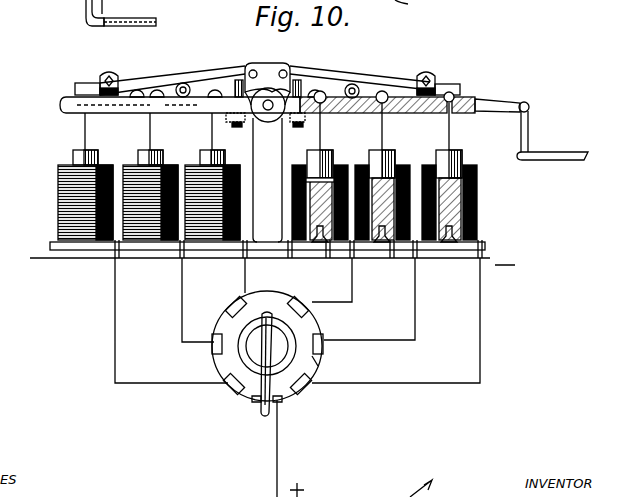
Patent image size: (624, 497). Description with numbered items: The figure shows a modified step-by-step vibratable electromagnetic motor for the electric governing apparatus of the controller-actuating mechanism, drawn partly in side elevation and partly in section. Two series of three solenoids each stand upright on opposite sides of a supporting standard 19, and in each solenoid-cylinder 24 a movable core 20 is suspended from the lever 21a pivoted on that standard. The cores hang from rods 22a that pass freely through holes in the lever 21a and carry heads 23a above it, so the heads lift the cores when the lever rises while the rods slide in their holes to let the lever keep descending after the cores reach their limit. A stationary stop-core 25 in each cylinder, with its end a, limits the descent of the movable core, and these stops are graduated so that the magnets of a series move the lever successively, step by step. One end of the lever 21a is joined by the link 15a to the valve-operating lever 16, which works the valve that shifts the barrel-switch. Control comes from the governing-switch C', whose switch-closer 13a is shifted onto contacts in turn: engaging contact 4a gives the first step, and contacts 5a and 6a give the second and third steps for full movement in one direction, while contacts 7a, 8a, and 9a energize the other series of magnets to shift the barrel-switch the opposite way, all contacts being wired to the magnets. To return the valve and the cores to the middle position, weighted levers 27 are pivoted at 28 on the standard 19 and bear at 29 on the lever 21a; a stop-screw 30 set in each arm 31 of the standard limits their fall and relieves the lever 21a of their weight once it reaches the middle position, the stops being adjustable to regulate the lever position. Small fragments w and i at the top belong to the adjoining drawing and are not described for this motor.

The lever 21a is at (60, 106).
The heads 23a is at (450, 60).
The weighted levers 27 is at (86, 82).
The bearing point 29 is at (183, 82).
The stop-screw 30 is at (213, 88).
The pivot 28 is at (252, 72).
The standard 19 is at (267, 180).
The arms 31 is at (233, 113).
The rods 22a is at (86, 132).
The solenoid cores 20 is at (72, 158).
The solenoid-cylinder 24 is at (492, 200).
The core end a is at (308, 176).
The stationary stop-core 25 is at (478, 226).
The link 15a is at (527, 128).
The valve-operating lever 16 is at (567, 150).
The contact 8a is at (216, 350).
The contact 9a is at (238, 306).
The contact 6a is at (296, 302).
The contact 5a is at (322, 338).
The contact 7a is at (236, 390).
The contact 4a is at (304, 394).
The governing-switch C' is at (332, 362).
The switch-closer 13a is at (262, 408).
The fragment w is at (121, 13).
The fragment i is at (405, 5).